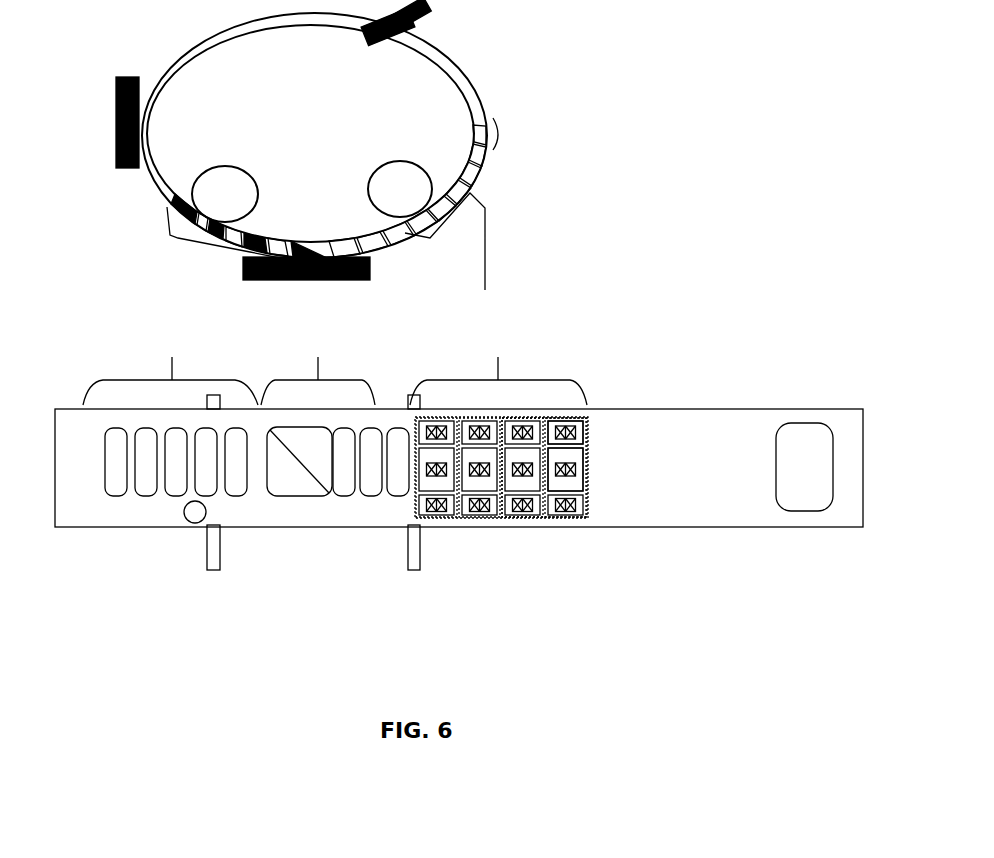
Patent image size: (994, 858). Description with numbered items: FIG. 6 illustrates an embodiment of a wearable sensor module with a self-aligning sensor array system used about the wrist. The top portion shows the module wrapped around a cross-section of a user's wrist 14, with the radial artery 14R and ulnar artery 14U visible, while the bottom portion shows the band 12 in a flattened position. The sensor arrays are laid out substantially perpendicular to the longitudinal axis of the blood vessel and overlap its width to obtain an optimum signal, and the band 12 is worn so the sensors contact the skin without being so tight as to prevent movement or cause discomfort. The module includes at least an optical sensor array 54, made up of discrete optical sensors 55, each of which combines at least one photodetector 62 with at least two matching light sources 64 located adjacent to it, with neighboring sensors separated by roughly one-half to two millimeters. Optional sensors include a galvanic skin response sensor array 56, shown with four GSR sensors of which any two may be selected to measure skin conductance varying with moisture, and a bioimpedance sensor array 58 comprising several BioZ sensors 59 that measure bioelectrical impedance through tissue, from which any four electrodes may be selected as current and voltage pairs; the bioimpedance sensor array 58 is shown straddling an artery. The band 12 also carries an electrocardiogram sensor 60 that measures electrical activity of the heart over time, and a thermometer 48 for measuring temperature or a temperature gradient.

The band 12 is at (495, 149).
The wrist 14 is at (168, 72).
The ulnar artery 14U is at (225, 193).
The radial artery 14R is at (380, 183).
The thermometer 48 is at (206, 509).
The optical sensor array 54 is at (458, 321).
The discrete optical sensors 55 is at (585, 518).
The galvanic skin response (GSR) sensor array 56 is at (330, 367).
The bioimpedance (BioZ) sensor array 58 is at (229, 253).
The BioZ sensors 59 is at (165, 494).
The electrocardiogram (ECG) sensor 60 is at (407, 43).
The photodetector 62 is at (588, 468).
The light sources 64 is at (587, 431).